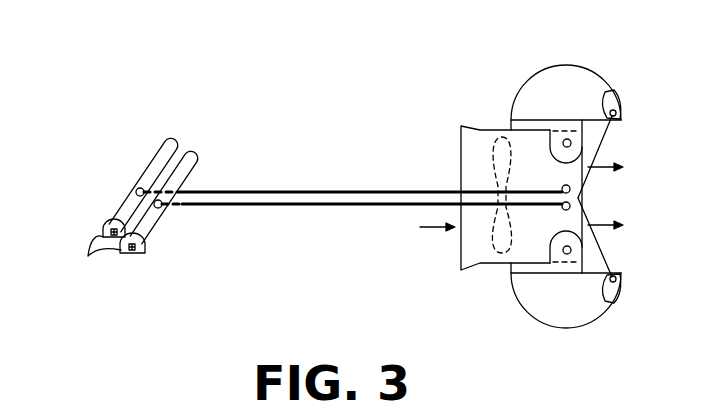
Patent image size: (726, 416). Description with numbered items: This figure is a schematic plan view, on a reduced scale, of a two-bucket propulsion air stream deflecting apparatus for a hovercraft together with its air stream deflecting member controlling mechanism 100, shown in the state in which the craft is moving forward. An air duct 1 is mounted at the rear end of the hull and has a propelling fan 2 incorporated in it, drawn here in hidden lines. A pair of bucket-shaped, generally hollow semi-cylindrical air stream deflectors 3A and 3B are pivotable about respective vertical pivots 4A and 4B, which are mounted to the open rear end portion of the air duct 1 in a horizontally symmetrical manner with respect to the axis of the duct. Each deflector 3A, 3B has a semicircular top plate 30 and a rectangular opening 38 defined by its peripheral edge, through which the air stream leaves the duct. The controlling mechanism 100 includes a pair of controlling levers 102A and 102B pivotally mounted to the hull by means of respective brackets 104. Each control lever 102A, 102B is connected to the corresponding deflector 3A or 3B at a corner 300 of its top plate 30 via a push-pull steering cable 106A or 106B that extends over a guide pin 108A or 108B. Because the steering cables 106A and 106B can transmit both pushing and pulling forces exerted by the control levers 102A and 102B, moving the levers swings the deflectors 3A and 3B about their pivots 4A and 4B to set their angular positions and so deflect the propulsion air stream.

The air stream deflecting member controlling mechanism 100 is at (232, 162).
The controlling lever 102A is at (160, 147).
The controlling lever 102B is at (157, 222).
The bracket 104 is at (100, 233).
The push-pull steering cable 106A is at (318, 190).
The push-pull steering cable 106B is at (290, 207).
The air duct 1 is at (470, 142).
The rectangular opening 38 is at (517, 128).
The propelling fan 2 is at (490, 240).
The semicircular top plate 30 is at (555, 76).
The air stream deflector 3A is at (590, 67).
The air stream deflector 3B is at (600, 320).
The corner of the top plate 300 is at (610, 93).
The vertical pivot 4A is at (572, 143).
The vertical pivot 4B is at (572, 250).
The guide pin 108A is at (580, 188).
The guide pin 108B is at (580, 206).